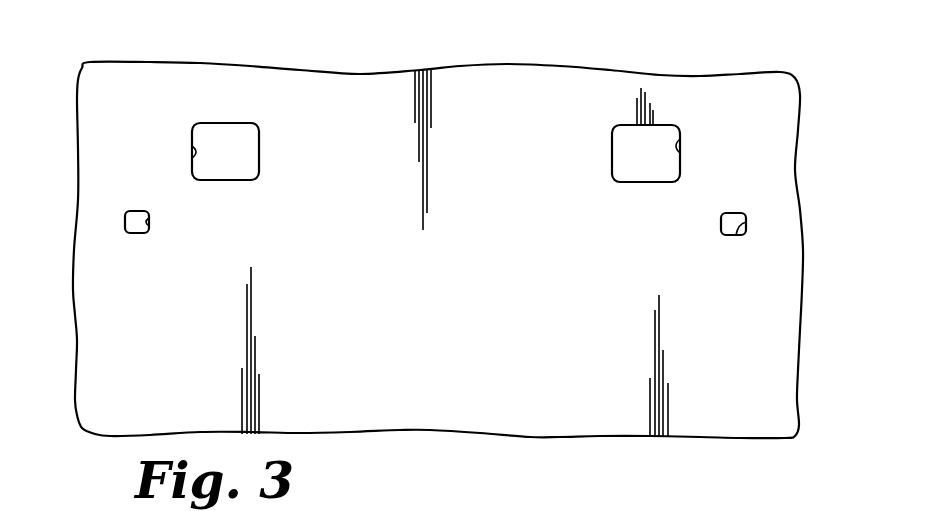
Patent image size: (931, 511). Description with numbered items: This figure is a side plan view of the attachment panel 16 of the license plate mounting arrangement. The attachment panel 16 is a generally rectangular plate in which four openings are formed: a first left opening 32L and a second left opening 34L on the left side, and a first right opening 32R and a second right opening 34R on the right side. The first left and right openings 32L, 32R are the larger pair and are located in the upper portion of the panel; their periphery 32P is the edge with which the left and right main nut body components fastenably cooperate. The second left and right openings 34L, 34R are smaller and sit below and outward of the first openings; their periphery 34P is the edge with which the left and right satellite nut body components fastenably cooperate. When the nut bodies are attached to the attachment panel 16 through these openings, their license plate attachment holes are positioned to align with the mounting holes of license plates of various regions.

The attachment panel 16 is at (388, 61).
The first left opening 32L is at (259, 150).
The first right opening 32R is at (612, 150).
The periphery of the first left and right openings 32P is at (192, 152).
The second left opening 34L is at (135, 233).
The second right opening 34R is at (721, 222).
The periphery of the second left and right openings 34P is at (149, 222).